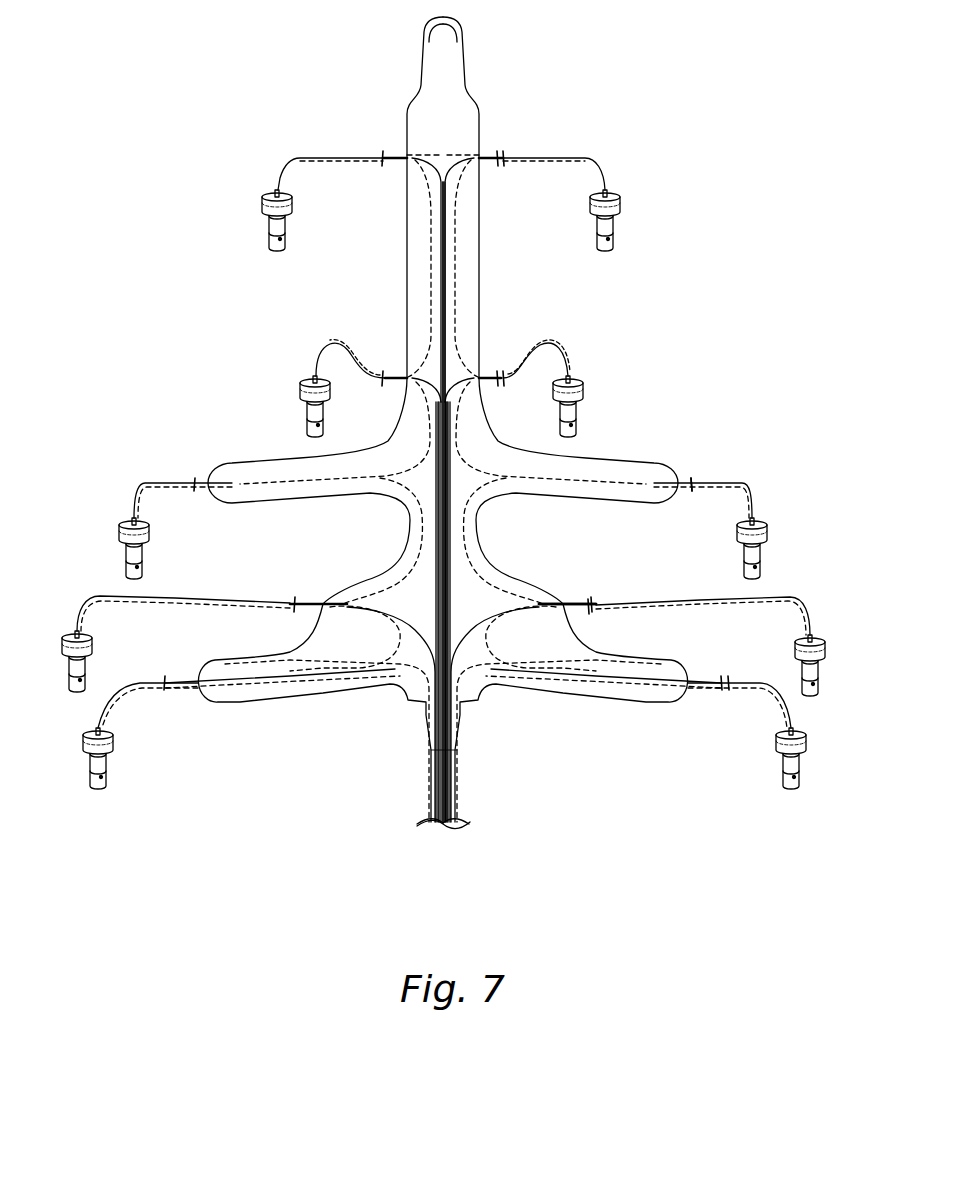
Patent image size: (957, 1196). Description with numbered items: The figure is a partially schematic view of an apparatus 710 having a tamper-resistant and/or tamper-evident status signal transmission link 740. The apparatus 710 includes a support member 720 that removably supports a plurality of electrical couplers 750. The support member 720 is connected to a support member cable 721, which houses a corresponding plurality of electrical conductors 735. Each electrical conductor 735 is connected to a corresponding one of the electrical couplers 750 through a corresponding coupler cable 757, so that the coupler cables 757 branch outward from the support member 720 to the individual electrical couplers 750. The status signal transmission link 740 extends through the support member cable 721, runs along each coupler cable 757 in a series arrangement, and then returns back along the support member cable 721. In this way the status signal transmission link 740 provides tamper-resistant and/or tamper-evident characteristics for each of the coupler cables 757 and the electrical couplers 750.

The apparatus 710 is at (699, 234).
The support member 720 is at (482, 125).
The support member cable 721 is at (452, 750).
The electrical conductors 735 is at (449, 834).
The status signal transmission link 740 is at (412, 452).
The electrical couplers 750 is at (262, 226).
The coupler cables 757 is at (278, 184).